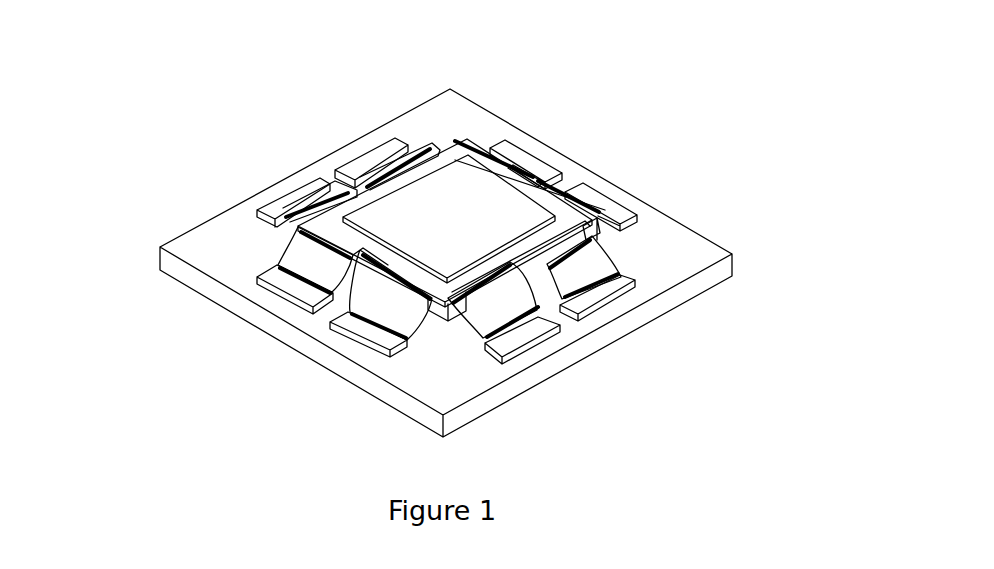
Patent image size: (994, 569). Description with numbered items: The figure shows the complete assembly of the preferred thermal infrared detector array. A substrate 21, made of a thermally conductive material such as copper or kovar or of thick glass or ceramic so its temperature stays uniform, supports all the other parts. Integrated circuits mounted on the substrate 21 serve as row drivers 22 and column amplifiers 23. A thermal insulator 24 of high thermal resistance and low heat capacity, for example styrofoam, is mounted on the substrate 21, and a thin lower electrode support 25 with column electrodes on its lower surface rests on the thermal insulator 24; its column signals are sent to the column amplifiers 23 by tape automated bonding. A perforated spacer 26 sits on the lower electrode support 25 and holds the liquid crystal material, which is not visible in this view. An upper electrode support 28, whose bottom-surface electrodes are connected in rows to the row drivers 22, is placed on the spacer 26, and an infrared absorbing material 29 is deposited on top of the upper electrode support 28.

The substrate 21 is at (218, 232).
The row drivers 22 is at (293, 291).
The column amplifiers 23 is at (292, 196).
The thermal insulator 24 is at (452, 323).
The lower electrode support 25 is at (585, 252).
The perforated spacer 26 is at (586, 218).
The upper electrode support 28 is at (472, 153).
The infrared absorbing material 29 is at (448, 192).